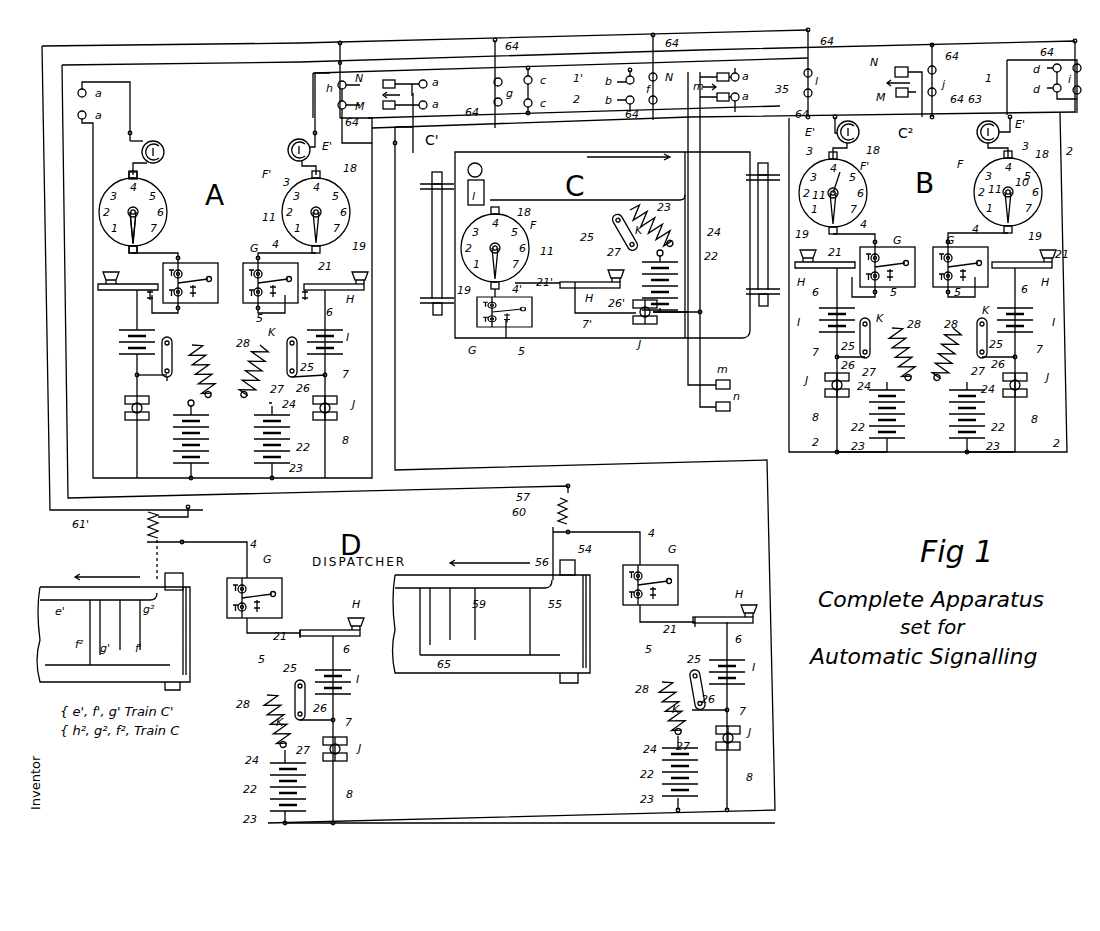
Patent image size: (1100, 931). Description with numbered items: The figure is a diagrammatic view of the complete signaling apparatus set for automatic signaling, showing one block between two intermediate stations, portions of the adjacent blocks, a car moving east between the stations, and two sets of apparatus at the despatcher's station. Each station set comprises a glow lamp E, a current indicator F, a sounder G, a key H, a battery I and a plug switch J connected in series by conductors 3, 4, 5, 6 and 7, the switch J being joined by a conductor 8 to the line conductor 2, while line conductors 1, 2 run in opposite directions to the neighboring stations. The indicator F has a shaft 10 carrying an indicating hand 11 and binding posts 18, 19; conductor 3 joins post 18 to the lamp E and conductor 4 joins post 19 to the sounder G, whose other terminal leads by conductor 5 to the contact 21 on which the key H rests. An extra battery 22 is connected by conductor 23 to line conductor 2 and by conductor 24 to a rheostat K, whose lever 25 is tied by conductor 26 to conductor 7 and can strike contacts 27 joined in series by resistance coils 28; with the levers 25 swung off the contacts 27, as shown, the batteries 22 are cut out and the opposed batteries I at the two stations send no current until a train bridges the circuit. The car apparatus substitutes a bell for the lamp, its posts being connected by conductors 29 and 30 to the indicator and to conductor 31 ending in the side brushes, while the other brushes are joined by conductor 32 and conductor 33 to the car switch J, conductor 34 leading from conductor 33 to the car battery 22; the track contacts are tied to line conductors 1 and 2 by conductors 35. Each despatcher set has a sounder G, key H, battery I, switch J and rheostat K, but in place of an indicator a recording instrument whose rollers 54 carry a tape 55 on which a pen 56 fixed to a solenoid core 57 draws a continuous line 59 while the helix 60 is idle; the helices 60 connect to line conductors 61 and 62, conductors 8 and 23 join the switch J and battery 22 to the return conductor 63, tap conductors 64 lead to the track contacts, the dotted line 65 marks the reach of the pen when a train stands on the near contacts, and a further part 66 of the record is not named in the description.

The line conductor 1 is at (112, 110).
The line conductor 2 is at (227, 298).
The connecting conductor 3 is at (126, 168).
The connecting conductor 4 is at (156, 250).
The connecting conductor 5 is at (173, 309).
The connecting conductor 6 is at (133, 313).
The connecting conductor 7 is at (130, 374).
The conductor 8 is at (133, 444).
The transverse rotary shaft 10 is at (855, 185).
The indicating hand 11 is at (125, 244).
The binding post 18 is at (138, 176).
The binding post 19 is at (125, 252).
The contact 21 is at (137, 283).
The battery 22 is at (176, 448).
The conductor 23 is at (186, 470).
The conductor 24 is at (187, 408).
The lever 25 is at (163, 368).
The conductor 26 is at (151, 384).
The contacts 27 is at (187, 401).
The resistance coils 28 is at (203, 346).
The conductor 29 is at (480, 214).
The conductor 30 is at (587, 176).
The conductor 31 is at (690, 203).
The conductor 32 is at (700, 346).
The conductor 33 is at (660, 320).
The conductor 34 is at (705, 300).
The conductors 35 is at (432, 102).
The rollers 54 is at (175, 570).
The tape 55 is at (113, 642).
The stylus or pen 56 is at (152, 572).
The solenoid core 57 is at (137, 525).
The continuous line 59 is at (92, 574).
The helix 60 is at (180, 557).
The line conductor 61 is at (40, 66).
The line conductor 62 is at (232, 58).
The return conductor 63 is at (521, 458).
The tap conductors 64 is at (350, 50).
The longitudinal dotted line 65 is at (67, 672).
The register compartment 66 is at (500, 615).
The glow lamp E is at (141, 152).
The current indicator F is at (168, 178).
The sounder G is at (212, 258).
The key H is at (127, 289).
The battery I is at (128, 342).
The plug switch J is at (125, 406).
The rheostat K is at (173, 340).